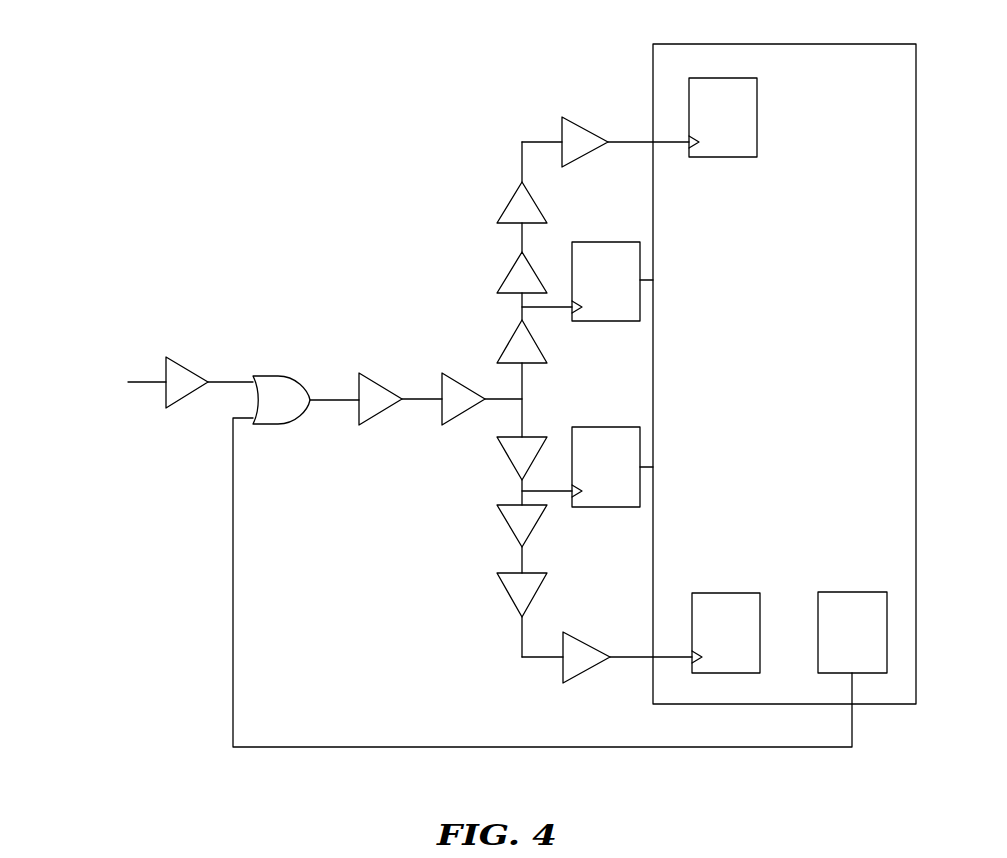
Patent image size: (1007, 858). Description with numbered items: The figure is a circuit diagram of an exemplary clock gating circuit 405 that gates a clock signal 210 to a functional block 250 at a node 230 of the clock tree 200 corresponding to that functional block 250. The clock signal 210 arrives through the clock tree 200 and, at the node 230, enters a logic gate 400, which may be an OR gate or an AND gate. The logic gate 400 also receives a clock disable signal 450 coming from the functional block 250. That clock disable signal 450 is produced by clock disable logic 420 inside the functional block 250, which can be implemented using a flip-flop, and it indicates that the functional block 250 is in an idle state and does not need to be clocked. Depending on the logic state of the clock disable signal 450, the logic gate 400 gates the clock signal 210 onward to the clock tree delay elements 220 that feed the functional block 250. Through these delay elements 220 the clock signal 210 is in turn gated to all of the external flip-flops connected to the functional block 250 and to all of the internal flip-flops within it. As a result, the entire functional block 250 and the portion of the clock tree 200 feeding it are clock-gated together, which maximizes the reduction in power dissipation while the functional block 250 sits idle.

The clock tree 200 is at (145, 382).
The clock signal 210 is at (228, 386).
The node 230 is at (241, 381).
The logic gate 400 is at (278, 376).
The clock tree delay elements 220 is at (380, 414).
The clock gating circuit 405 is at (273, 268).
The functional block 250 is at (785, 44).
The clock disable logic 420 is at (833, 592).
The clock disable signal 450 is at (476, 748).